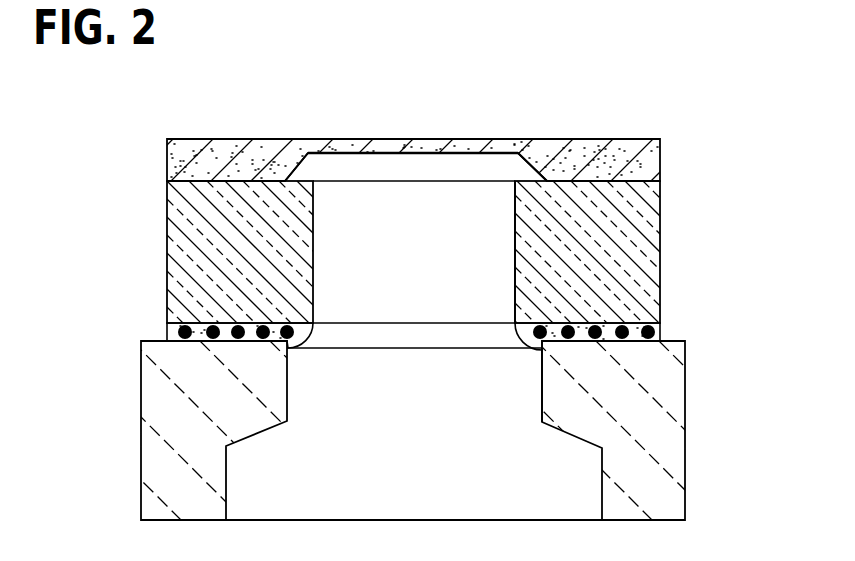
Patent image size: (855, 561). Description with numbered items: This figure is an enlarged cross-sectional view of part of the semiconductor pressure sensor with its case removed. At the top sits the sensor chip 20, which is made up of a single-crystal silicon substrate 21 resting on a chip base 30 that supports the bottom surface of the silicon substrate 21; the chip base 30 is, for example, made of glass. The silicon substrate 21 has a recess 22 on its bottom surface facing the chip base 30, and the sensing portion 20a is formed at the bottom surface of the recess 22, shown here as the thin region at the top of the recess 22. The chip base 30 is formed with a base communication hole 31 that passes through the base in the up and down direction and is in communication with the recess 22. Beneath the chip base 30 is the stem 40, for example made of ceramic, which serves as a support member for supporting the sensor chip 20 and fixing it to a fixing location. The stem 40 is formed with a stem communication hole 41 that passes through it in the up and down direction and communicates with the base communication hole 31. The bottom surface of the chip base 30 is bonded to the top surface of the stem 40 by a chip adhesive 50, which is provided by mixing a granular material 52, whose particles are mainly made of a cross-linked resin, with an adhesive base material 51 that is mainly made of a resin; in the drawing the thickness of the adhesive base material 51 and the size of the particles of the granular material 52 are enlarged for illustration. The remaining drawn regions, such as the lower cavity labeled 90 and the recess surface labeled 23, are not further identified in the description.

The sensor chip 20 is at (459, 263).
The sensing portion 20a is at (466, 124).
The silicon substrate 21 is at (662, 170).
The recess 22 is at (297, 169).
The recess bottom surface 23 is at (408, 139).
The chip base 30 is at (662, 220).
The base communication hole 31 is at (517, 272).
The stem 40 is at (420, 430).
The stem communication hole 41 is at (544, 386).
The chip adhesive 50 is at (368, 299).
The adhesive base material 51 is at (197, 322).
The granular material 52 is at (184, 326).
The pressure chamber 90 is at (252, 473).